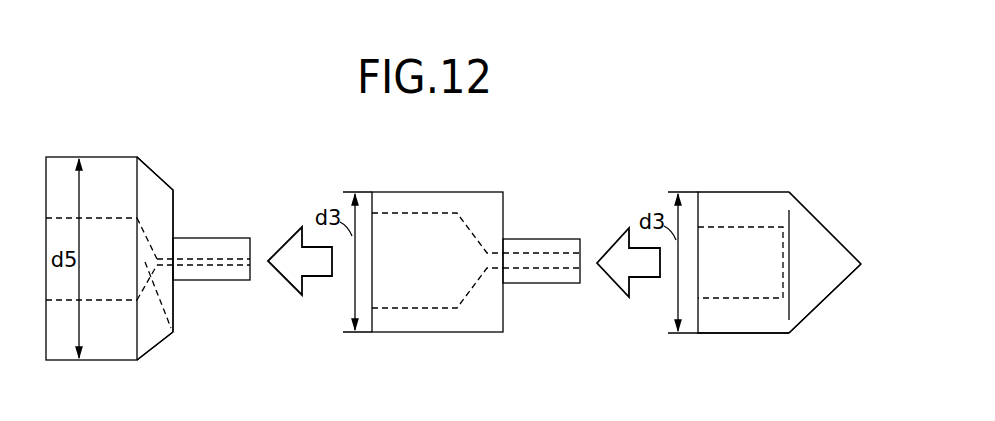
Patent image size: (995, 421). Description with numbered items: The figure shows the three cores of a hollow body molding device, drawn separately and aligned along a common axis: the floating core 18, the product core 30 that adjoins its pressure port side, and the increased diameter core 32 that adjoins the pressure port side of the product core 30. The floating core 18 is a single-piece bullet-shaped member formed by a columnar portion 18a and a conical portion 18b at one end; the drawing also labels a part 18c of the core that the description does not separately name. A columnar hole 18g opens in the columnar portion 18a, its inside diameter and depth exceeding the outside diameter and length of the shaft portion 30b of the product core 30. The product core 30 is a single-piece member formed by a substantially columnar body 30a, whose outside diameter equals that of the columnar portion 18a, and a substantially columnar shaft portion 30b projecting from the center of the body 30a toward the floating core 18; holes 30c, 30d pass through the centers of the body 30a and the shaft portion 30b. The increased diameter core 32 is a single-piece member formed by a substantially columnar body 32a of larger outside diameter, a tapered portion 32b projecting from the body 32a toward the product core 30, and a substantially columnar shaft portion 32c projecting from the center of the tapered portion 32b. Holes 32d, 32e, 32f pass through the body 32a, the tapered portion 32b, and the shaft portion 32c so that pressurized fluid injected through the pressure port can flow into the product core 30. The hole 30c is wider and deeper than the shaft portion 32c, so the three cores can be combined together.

The floating core 18 is at (789, 188).
The columnar portion 18a is at (745, 318).
The conical portion 18b is at (826, 238).
The inclined face 18c is at (827, 313).
The hole 18g is at (741, 252).
The product core 30 is at (494, 184).
The body 30a is at (415, 232).
The shaft portion 30b is at (528, 241).
The hole 30c is at (415, 300).
The hole 30d is at (550, 266).
The increased diameter core 32 is at (189, 178).
The body 32a is at (97, 188).
The tapered portion 32b is at (152, 188).
The shaft portion 32c is at (220, 247).
The hole 32d is at (103, 290).
The hole 32e is at (172, 336).
The hole 32f is at (218, 267).